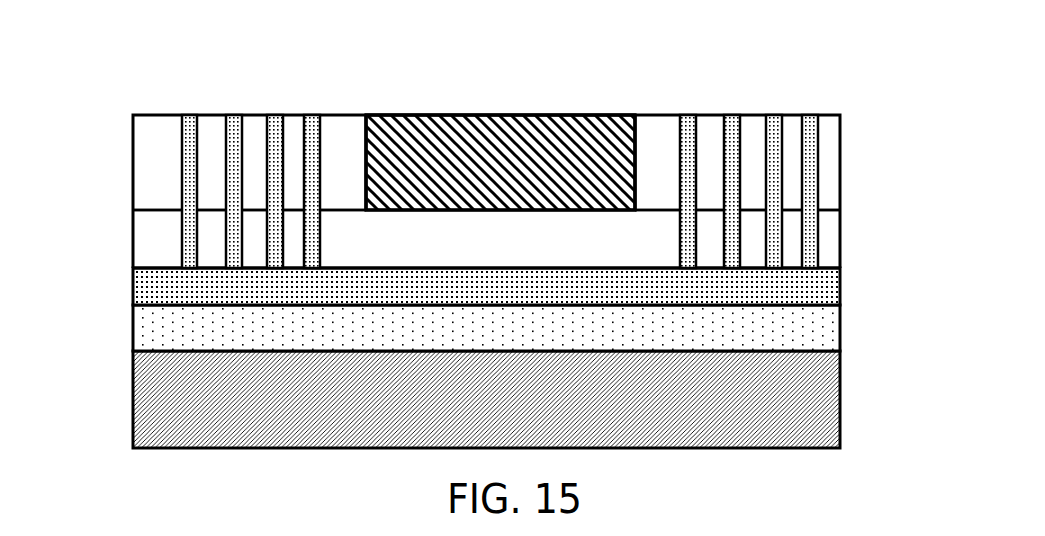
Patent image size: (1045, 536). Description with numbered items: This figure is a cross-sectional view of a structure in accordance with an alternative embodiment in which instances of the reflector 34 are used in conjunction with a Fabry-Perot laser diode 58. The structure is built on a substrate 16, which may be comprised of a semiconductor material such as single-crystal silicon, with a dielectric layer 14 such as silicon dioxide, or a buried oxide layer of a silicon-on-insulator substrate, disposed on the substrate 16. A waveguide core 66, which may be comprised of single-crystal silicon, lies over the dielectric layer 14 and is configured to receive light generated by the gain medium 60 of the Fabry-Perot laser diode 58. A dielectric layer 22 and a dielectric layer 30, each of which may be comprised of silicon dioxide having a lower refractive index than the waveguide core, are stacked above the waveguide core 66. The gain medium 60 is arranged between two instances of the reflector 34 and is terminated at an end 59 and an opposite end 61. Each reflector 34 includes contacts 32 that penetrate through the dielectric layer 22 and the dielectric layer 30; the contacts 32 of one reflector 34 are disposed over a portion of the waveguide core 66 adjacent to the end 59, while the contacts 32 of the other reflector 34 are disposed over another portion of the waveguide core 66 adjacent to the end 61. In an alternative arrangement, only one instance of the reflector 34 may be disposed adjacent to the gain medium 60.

The dielectric layer 14 is at (792, 330).
The substrate 16 is at (167, 403).
The dielectric layer 22 is at (158, 242).
The dielectric layer 30 is at (158, 190).
The contacts 32 is at (187, 145).
The reflector 34 is at (163, 92).
The Fabry-Perot laser diode 58 is at (517, 85).
The end 59 is at (365, 142).
The gain medium 60 is at (457, 133).
The end 61 is at (637, 145).
The waveguide core 66 is at (788, 290).